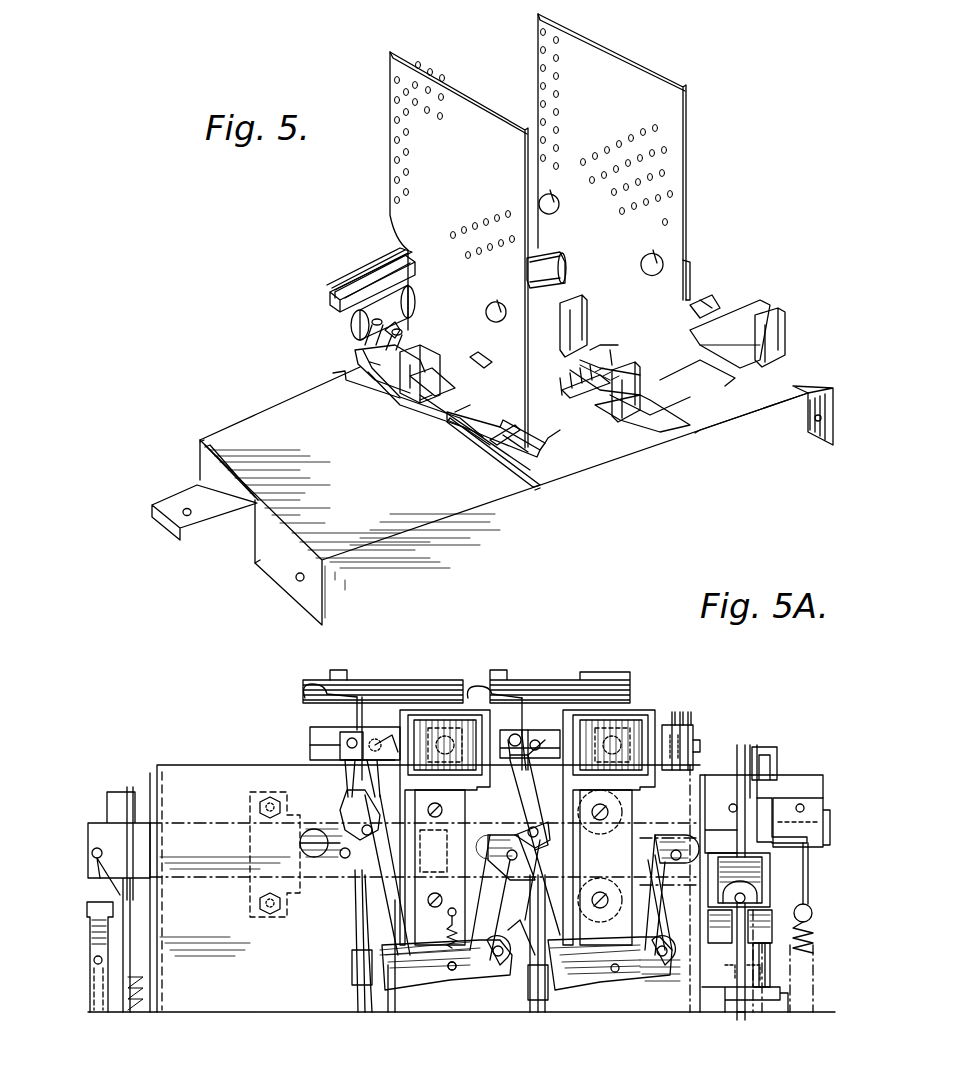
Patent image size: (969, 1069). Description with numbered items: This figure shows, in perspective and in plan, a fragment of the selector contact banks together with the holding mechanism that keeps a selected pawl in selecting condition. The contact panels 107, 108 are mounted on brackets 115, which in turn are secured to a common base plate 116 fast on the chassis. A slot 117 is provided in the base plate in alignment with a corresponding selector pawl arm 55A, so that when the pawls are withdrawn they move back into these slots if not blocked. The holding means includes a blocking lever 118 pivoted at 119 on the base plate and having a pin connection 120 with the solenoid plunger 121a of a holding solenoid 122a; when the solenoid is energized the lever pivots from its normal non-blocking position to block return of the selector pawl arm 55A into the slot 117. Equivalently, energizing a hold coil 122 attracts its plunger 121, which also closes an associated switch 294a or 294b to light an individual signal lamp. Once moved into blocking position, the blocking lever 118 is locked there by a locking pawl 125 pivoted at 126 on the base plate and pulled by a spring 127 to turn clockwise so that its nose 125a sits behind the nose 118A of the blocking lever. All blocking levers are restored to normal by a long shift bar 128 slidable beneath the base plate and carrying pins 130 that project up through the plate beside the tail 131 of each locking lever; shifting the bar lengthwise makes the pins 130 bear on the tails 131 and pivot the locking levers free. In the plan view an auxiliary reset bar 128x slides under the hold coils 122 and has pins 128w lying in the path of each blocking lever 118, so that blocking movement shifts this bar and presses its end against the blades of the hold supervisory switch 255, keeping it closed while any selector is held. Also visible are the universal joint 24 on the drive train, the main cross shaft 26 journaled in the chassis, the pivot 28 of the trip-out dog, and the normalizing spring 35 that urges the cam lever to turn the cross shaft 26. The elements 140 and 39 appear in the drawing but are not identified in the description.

In FIG. 5, the contact panel 107 is at (615, 55).
In FIG. 5, the contact panel 108 is at (462, 92).
In FIG. 5, the bracket 115 is at (526, 407).
In FIG. 5, the base plate 116 is at (504, 496).
In FIG. 5, the slot 117 is at (697, 445).
In FIG. 5A, the slot 117 is at (352, 930).
In FIG. 5, the blocking lever 118 is at (438, 405).
In FIG. 5A, the blocking lever 118 is at (370, 860).
In FIG. 5, the nose of blocking lever 118A is at (500, 412).
In FIG. 5, the pivot 119 is at (438, 378).
In FIG. 5A, the pivot 119 is at (350, 806).
In FIG. 5, the pin connection 120 is at (362, 358).
In FIG. 5A, the pin connection 120 is at (528, 825).
In FIG. 5, the hold plunger 121 is at (548, 268).
In FIG. 5A, the hold plunger 121 is at (548, 748).
In FIG. 5, the solenoid plunger 121a is at (362, 335).
In FIG. 5A, the solenoid plunger 121a is at (333, 738).
In FIG. 5, the hold coil 122 is at (575, 400).
In FIG. 5A, the hold coil 122 is at (655, 770).
In FIG. 5A, the holding solenoid 122a is at (478, 770).
In FIG. 5, the locking pawl 125 is at (555, 460).
In FIG. 5A, the locking pawl 125 is at (428, 972).
In FIG. 5, the nose of locking pawl 125a is at (514, 458).
In FIG. 5, the pivot 126 is at (620, 408).
In FIG. 5A, the pivot 126 is at (355, 768).
In FIG. 5A, the spring 127 is at (448, 918).
In FIG. 5, the shift bar 128 is at (183, 498).
In FIG. 5A, the shift bar 128 is at (94, 823).
In FIG. 5, the pin 128w is at (418, 318).
In FIG. 5A, the pin 128w is at (382, 738).
In FIG. 5, the auxiliary reset bar 128x is at (413, 350).
In FIG. 5A, the auxiliary reset bar 128x is at (310, 745).
In FIG. 5, the pin 130 is at (595, 352).
In FIG. 5A, the pin 130 is at (495, 875).
In FIG. 5, the tail of locking lever 131 is at (483, 358).
In FIG. 5A, the tail of locking lever 131 is at (660, 918).
In FIG. 5A, the contact bars 140 is at (752, 953).
In FIG. 5A, the hold supervisory switch 255 is at (718, 705).
In FIG. 5, the switch 294a is at (364, 268).
In FIG. 5A, the switch 294a is at (300, 686).
In FIG. 5A, the switch 294b is at (545, 662).
In FIG. 5A, the universal joint 24 is at (765, 872).
In FIG. 5A, the main cross shaft 26 is at (760, 748).
In FIG. 5A, the pivot 28 is at (780, 767).
In FIG. 5A, the spring 35 is at (814, 932).
In FIG. 5A, the rod end 39 is at (740, 1015).
In FIG. 5A, the selector pawl arm 55A is at (345, 1004).